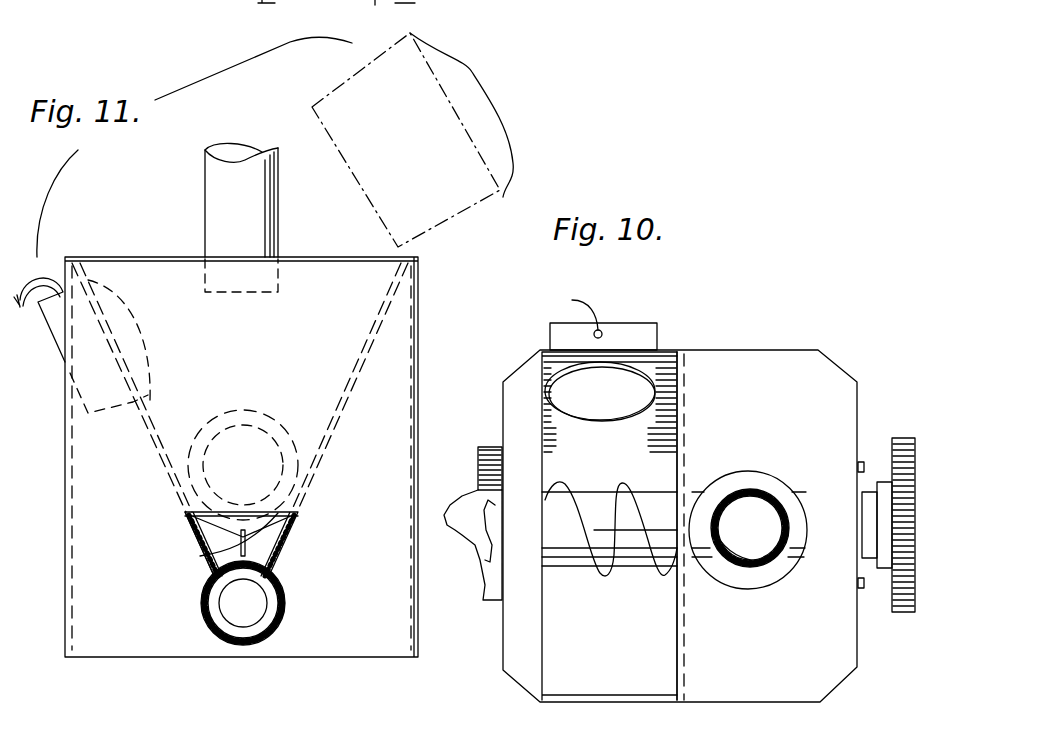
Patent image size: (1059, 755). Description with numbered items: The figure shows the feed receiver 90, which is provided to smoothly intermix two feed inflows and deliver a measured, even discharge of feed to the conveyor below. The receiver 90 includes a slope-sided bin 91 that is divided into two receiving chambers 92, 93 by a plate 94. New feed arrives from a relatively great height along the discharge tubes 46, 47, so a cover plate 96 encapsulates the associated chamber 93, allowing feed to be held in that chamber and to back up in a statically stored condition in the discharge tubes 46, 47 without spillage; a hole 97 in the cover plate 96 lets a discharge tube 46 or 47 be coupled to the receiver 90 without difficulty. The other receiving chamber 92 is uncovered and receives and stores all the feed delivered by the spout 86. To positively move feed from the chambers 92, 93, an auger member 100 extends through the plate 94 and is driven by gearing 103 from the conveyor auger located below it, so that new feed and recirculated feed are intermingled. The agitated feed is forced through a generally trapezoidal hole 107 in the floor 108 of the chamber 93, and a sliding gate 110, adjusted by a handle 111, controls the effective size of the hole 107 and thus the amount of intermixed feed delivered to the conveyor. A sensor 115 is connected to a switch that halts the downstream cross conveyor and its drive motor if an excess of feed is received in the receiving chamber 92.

In FIG. 11, the spout 86 is at (408, 126).
In FIG. 11, the discharge tube 46 is at (204, 217).
In FIG. 10, the discharge tube 46 is at (759, 491).
In FIG. 11, the discharge tube 47 is at (235, 198).
In FIG. 10, the discharge tube 47 is at (748, 488).
In FIG. 11, the sensor 115 is at (150, 362).
In FIG. 10, the sensor 115 is at (610, 390).
In FIG. 11, the auger member 100 is at (236, 382).
In FIG. 10, the auger member 100 is at (640, 555).
In FIG. 11, the floor 108 is at (214, 510).
In FIG. 11, the hole 107 is at (238, 513).
In FIG. 11, the handle 111 is at (210, 577).
In FIG. 10, the handle 111 is at (500, 440).
In FIG. 11, the sliding gate 110 is at (283, 543).
In FIG. 10, the feed receiver 90 is at (684, 340).
In FIG. 10, the slope-sided bin 91 is at (782, 356).
In FIG. 10, the receiving chamber 92 is at (640, 654).
In FIG. 10, the receiving chamber 93 is at (774, 578).
In FIG. 10, the plate 94 is at (680, 452).
In FIG. 10, the cover plate 96 is at (830, 392).
In FIG. 10, the hole 97 is at (798, 512).
In FIG. 10, the gearing 103 is at (925, 408).